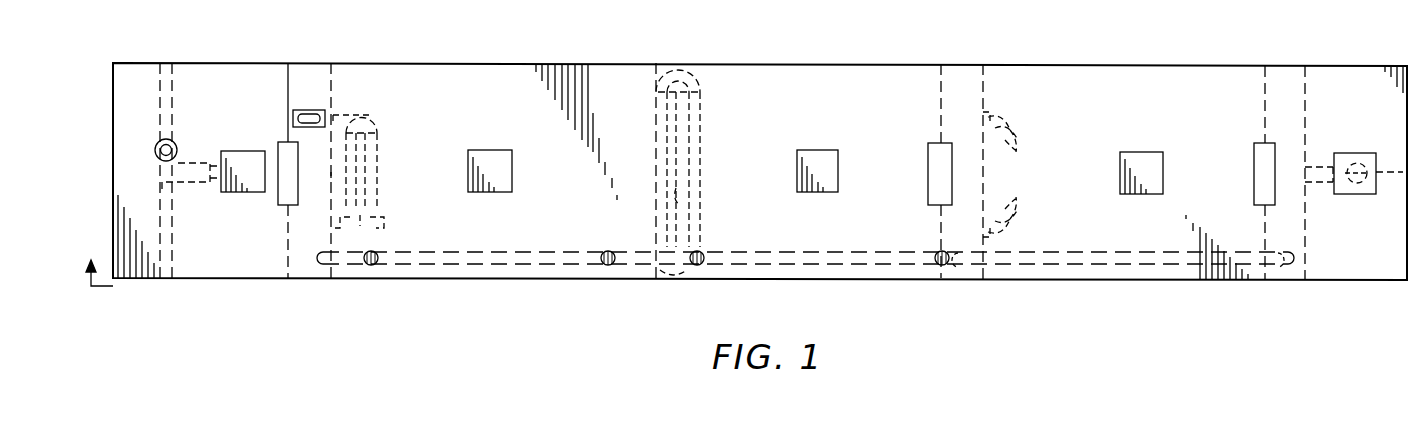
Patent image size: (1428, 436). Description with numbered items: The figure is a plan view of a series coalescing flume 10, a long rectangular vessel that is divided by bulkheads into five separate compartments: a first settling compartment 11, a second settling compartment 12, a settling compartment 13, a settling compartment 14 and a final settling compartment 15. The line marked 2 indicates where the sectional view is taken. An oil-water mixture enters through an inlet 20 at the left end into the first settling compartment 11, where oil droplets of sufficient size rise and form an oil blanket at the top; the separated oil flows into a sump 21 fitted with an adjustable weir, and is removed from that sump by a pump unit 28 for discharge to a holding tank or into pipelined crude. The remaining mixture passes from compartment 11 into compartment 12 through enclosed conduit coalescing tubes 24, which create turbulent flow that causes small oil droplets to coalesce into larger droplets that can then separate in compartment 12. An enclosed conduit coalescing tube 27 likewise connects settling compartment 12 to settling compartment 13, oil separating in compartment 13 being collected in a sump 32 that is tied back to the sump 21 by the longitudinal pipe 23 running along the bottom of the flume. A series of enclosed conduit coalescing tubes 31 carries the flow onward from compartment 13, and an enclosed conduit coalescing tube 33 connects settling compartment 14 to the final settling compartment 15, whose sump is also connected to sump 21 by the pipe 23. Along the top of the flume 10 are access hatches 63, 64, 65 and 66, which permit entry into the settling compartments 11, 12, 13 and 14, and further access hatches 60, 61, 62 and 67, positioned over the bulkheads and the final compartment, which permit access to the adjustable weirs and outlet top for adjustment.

The flume 10 is at (1116, 60).
The first settling compartment 11 is at (211, 257).
The second settling compartment 12 is at (434, 233).
The settling compartment 13 is at (742, 236).
The settling compartment 14 is at (1084, 236).
The final settling compartment 15 is at (1354, 243).
The section line for FIG. 2 is at (98, 262).
The inlet 20 is at (173, 141).
The sump 21 is at (288, 80).
The longitudinal pipe 23 is at (480, 250).
The enclosed conduit coalescing tubes 24 is at (378, 149).
The enclosed conduit coalescing tube 27 is at (700, 147).
The pump unit 28 is at (308, 110).
The enclosed conduit coalescing tubes 31 is at (1015, 119).
The sump 32 is at (940, 80).
The enclosed conduit coalescing tube 33 is at (1312, 167).
The access hatch 60 is at (278, 198).
The access hatch 61 is at (928, 167).
The access hatch 62 is at (1254, 168).
The access hatch 63 is at (246, 151).
The access hatch 64 is at (490, 150).
The access hatch 65 is at (815, 150).
The access hatch 66 is at (1145, 152).
The access hatch 67 is at (1360, 153).